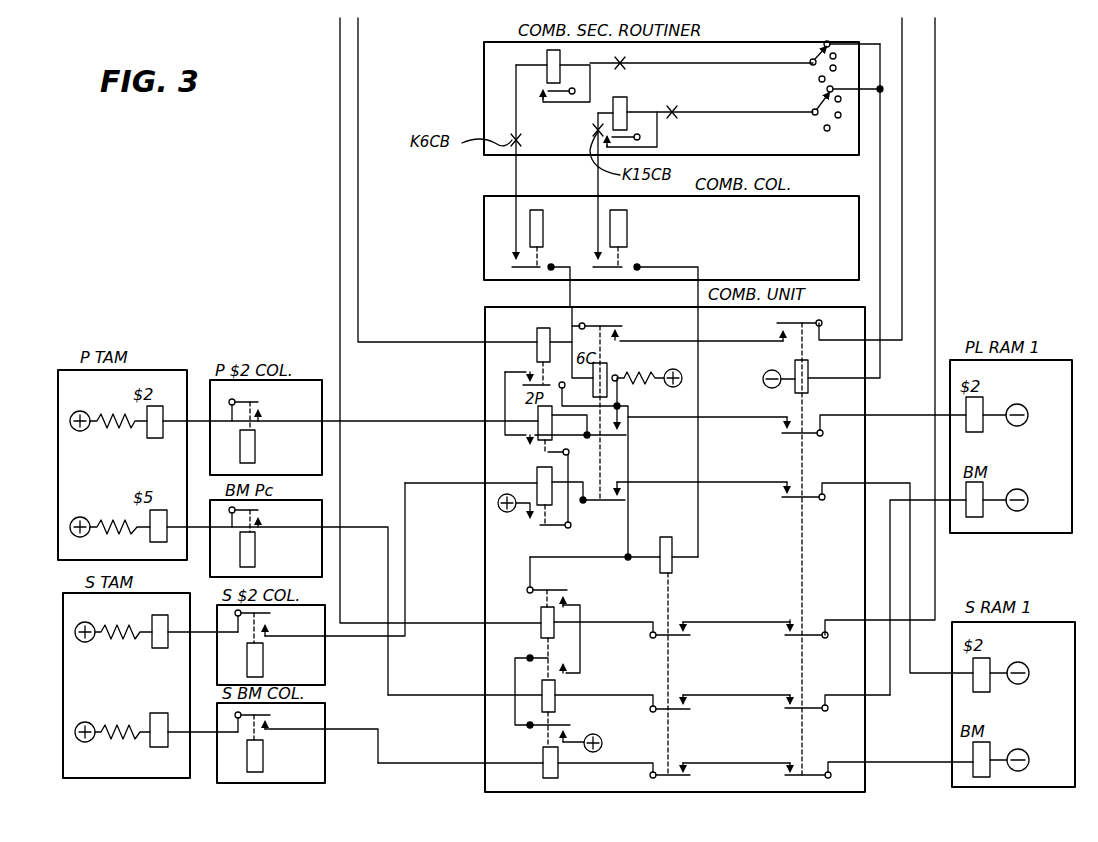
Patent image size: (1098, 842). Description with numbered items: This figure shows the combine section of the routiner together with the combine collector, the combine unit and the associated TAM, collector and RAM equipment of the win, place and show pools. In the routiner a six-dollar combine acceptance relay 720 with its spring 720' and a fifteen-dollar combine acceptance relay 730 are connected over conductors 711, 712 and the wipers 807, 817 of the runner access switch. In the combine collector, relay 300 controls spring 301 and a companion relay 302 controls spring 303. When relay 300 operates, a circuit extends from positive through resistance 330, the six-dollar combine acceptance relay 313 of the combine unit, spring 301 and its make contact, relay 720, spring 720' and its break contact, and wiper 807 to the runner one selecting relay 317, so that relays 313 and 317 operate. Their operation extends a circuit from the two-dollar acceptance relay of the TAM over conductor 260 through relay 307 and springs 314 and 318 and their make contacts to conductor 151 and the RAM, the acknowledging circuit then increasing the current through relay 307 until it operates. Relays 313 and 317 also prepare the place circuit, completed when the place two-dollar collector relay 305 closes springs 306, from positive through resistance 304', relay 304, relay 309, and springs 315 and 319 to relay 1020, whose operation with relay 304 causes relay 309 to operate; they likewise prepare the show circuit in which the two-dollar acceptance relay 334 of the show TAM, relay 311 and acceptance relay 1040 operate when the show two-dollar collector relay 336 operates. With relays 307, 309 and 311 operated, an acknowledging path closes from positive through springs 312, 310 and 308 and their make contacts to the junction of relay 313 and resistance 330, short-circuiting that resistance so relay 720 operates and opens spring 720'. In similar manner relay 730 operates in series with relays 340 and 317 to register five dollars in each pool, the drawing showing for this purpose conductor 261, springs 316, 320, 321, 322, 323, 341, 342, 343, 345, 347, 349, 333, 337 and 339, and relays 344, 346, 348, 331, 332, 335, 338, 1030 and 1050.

The conductor 260 is at (358, 70).
The conductor 261 is at (340, 66).
The conductor 151 is at (902, 72).
The spring 720' is at (514, 67).
The $6.00 combine acceptance relay 720 is at (554, 74).
The conductor with break contact 711 is at (622, 60).
The $15.00 combine acceptance relay 730 is at (622, 92).
The conductor with break contact 712 is at (674, 110).
The wiper of the runner access switch 807 is at (810, 80).
The rotary switch 817 is at (812, 125).
The relay of the combine collector 300 is at (543, 228).
The spring 301 is at (538, 263).
The relay 302 is at (627, 228).
The relay contact 303 is at (622, 263).
The relay 307 is at (537, 340).
The spring 308 is at (530, 372).
The relay 309 is at (520, 420).
The spring 310 is at (538, 470).
The relay 311 is at (586, 442).
The spring 312 is at (535, 527).
The $6.00 combine acceptance relay of the combine unit 313 is at (605, 374).
The spring 314 is at (612, 328).
The spring 315 is at (612, 437).
The relay contact 316 is at (616, 501).
The runner 1 selecting relay 317 is at (795, 370).
The spring 318 is at (778, 324).
The spring 319 is at (783, 434).
The relay contact 320 is at (783, 498).
The relay contact 321 is at (785, 636).
The relay contact 322 is at (785, 709).
The relay contact 323 is at (785, 776).
The resistance 330 is at (642, 381).
The relay 340 is at (680, 535).
The relay contact 341 is at (649, 638).
The relay contact 342 is at (650, 712).
The relay contact 343 is at (650, 776).
The 5W relay 344 is at (541, 617).
The relay contact 345 is at (548, 590).
The 5P relay 346 is at (553, 698).
The relay contact 347 is at (575, 654).
The 5S relay 348 is at (543, 768).
The relay contact 349 is at (542, 728).
The resistance 304' is at (108, 412).
The relay 304 is at (154, 436).
The place $2.00 collector relay 305 is at (255, 445).
The springs 306 is at (260, 404).
The relay 331 is at (152, 540).
The relay 332 is at (255, 550).
The relay contact 333 is at (260, 512).
The $2.00 acceptance relay of the show TAM 334 is at (154, 620).
The relay 335 is at (154, 722).
The $2.00 collector relay of the show pool 336 is at (263, 660).
The relay contact 337 is at (268, 616).
The relay 338 is at (263, 755).
The relay contact 339 is at (268, 718).
The relay 1020 is at (980, 430).
The relay 1030 is at (980, 515).
The acceptance relay of RAM 1 in the show pool 1040 is at (985, 690).
The relay 1050 is at (985, 745).